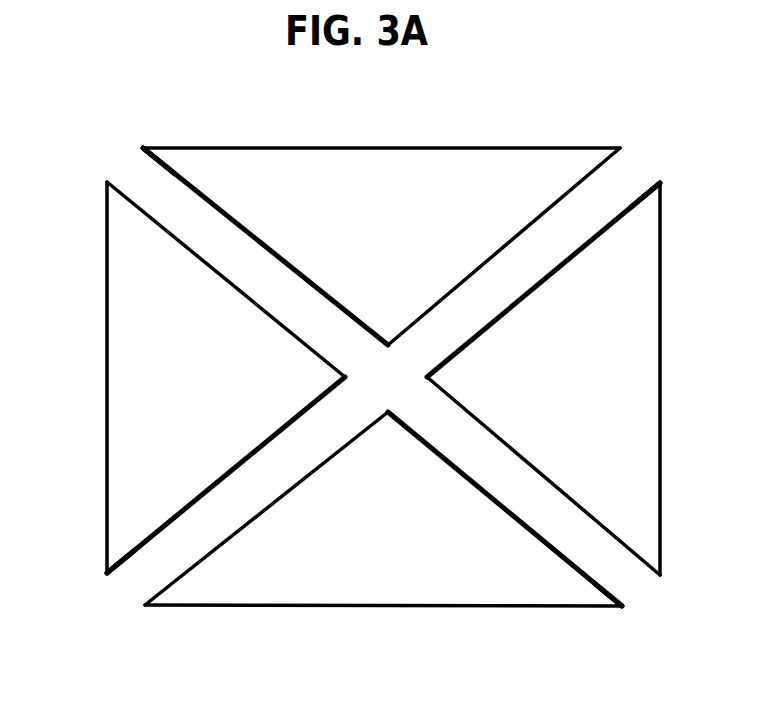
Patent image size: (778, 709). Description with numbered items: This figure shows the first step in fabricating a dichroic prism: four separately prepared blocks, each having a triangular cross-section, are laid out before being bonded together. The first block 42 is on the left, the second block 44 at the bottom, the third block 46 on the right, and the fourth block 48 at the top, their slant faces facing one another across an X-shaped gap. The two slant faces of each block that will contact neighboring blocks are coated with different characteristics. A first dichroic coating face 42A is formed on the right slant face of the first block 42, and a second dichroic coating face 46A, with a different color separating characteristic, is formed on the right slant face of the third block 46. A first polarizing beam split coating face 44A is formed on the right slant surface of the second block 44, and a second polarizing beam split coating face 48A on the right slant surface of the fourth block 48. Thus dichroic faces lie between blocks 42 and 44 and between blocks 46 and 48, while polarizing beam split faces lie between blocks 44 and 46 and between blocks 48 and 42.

The first block 42 is at (215, 373).
The second block 44 is at (405, 524).
The third block 46 is at (602, 376).
The fourth block 48 is at (402, 243).
The first dichroic coating face 42A is at (132, 553).
The first polarizing beam split coating face 44A is at (607, 588).
The second dichroic coating face 46A is at (631, 205).
The second polarizing beam split coating face 48A is at (163, 168).